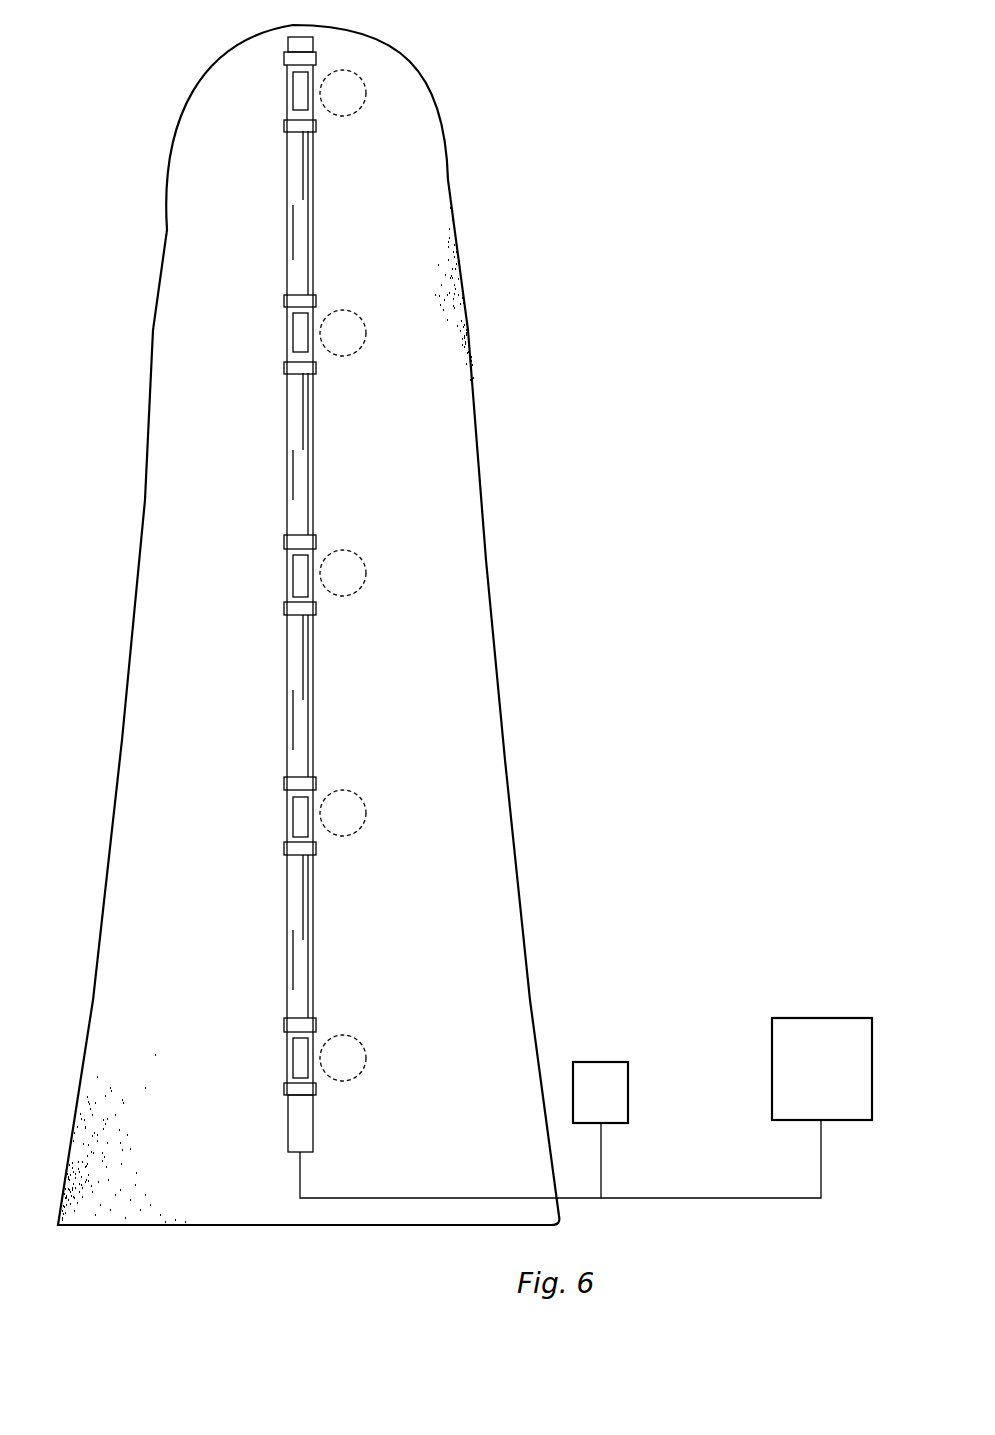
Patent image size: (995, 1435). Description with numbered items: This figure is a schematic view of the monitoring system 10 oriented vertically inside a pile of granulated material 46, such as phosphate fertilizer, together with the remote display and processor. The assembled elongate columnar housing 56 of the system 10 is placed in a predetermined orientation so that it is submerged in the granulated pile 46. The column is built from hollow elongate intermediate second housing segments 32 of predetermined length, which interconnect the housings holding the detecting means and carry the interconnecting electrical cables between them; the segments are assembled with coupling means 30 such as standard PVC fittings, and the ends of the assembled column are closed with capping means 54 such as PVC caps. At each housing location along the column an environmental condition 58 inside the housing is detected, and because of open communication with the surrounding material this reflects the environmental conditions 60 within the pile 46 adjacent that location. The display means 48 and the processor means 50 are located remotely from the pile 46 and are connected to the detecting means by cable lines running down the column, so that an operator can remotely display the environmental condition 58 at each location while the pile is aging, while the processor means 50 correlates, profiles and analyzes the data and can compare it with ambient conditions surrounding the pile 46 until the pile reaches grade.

The system for monitoring environmental conditions 10 is at (662, 449).
The coupling means 30 is at (316, 58).
The second housing segment 32 is at (287, 209).
The pile of granulated material 46 is at (467, 332).
The display means 48 is at (618, 1106).
The processor means 50 is at (840, 1078).
The capping means 54 is at (288, 44).
The columnar housing 56 is at (445, 659).
The environmental condition 58 is at (300, 96).
The environmental conditions within the pile 60 is at (361, 108).